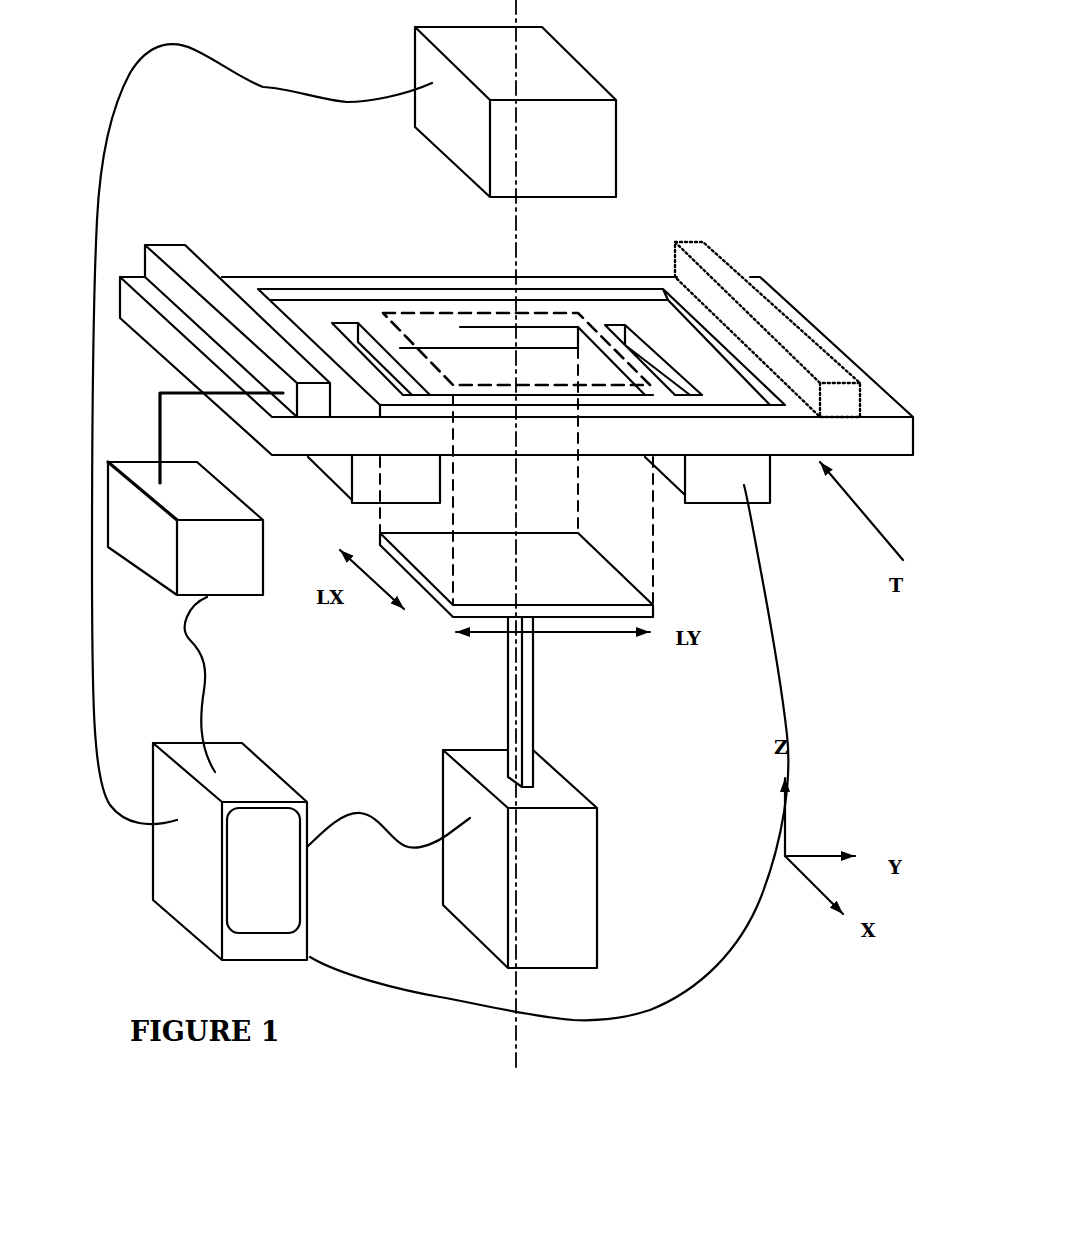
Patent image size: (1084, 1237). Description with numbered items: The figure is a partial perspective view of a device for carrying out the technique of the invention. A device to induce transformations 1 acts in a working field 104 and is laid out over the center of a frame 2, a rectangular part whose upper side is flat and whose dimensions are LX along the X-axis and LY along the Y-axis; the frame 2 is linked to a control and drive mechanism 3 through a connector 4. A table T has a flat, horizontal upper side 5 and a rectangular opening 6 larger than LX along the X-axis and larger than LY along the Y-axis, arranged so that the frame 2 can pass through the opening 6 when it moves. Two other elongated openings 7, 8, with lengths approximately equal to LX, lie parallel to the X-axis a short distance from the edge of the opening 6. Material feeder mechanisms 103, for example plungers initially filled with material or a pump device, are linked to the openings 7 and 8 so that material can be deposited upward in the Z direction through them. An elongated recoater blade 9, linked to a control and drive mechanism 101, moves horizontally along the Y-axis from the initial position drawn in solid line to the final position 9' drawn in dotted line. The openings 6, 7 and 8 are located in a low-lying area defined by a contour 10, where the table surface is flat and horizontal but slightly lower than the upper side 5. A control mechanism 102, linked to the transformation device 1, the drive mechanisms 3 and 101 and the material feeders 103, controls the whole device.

The device to induce transformations 1 is at (620, 134).
The frame 2 is at (658, 597).
The control and drive mechanism 3 is at (601, 847).
The connector 4 is at (538, 704).
The upper side 5 is at (246, 284).
The rectangular opening 6 is at (483, 355).
The elongated opening 7 is at (372, 340).
The elongated opening 8 is at (655, 350).
The recoater blade 9 is at (230, 274).
The recoater blade final position 9' is at (775, 316).
The contour 10 is at (340, 284).
The control and drive mechanism 101 is at (243, 601).
The control mechanism 102 is at (288, 778).
The material feeder mechanisms 103 is at (642, 469).
The working field 104 is at (582, 310).